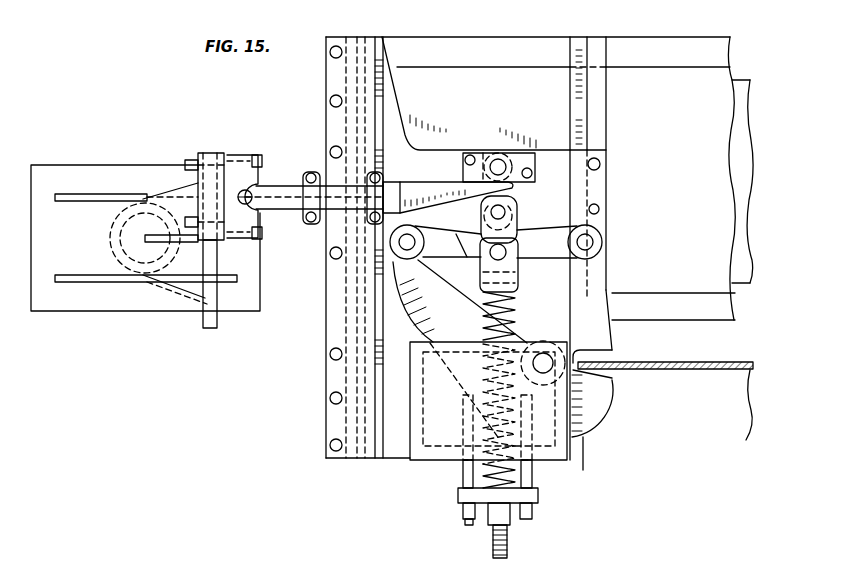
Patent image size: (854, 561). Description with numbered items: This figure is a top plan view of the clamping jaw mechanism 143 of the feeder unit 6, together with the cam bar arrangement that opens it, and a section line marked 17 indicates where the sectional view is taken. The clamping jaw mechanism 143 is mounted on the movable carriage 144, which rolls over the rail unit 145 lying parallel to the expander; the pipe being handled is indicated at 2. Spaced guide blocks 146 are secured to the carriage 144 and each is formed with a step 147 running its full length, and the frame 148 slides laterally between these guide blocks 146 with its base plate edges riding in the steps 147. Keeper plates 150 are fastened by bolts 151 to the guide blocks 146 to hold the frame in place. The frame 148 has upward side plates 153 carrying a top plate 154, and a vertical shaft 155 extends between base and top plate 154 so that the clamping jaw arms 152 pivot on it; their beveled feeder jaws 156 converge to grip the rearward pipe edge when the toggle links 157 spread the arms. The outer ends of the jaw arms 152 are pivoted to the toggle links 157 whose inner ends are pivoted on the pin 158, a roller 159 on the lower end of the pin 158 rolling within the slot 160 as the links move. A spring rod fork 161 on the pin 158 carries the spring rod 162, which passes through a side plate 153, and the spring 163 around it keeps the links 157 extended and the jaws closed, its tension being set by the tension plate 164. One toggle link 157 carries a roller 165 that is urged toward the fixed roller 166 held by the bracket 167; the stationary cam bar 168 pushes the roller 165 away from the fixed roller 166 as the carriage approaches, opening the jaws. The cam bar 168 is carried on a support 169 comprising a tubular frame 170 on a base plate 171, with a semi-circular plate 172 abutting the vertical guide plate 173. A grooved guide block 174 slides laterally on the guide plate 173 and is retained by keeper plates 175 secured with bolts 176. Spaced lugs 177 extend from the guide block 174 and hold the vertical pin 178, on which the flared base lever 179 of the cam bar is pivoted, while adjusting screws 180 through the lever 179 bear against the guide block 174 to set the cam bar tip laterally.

The bar 2 is at (707, 362).
The feeder unit 6 is at (493, 36).
The section line 17 is at (325, 242).
The clamping jaw mechanism 143 is at (400, 462).
The movable carriage 144 is at (648, 45).
The rail unit 145 is at (738, 180).
The guide blocks 146 is at (608, 120).
The step 147 is at (583, 93).
The frame 148 is at (437, 150).
The keeper plates 150 is at (600, 180).
The bolts 151 is at (333, 57).
The clamping jaw arms 152 is at (600, 313).
The side plates 153 is at (410, 385).
The top plate 154 is at (450, 437).
The shaft 155 is at (543, 373).
The feeder jaws 156 is at (615, 350).
The toggle links 157 is at (470, 232).
The pin 158 is at (505, 260).
The roller 159 is at (508, 249).
The slot 160 is at (440, 300).
The spring rod fork 161 is at (512, 268).
The spring rod 162 is at (510, 545).
The spring 163 is at (515, 330).
The tension plate 164 is at (540, 500).
The roller 165 is at (508, 200).
The fixed roller 166 is at (500, 150).
The bracket 167 is at (478, 153).
The cam bar 168 is at (437, 192).
The support 169 is at (145, 288).
The tubular frame 170 is at (112, 243).
The base plate 171 is at (105, 165).
The semi-circular plate 172 is at (185, 292).
The guide plate 173 is at (212, 330).
The guide block 174 is at (215, 152).
The keeper plates 175 is at (198, 178).
The bolts 176 is at (185, 164).
The lugs 177 is at (248, 194).
The pin 178 is at (258, 172).
The base lever 179 is at (237, 154).
The adjusting screws 180 is at (258, 155).